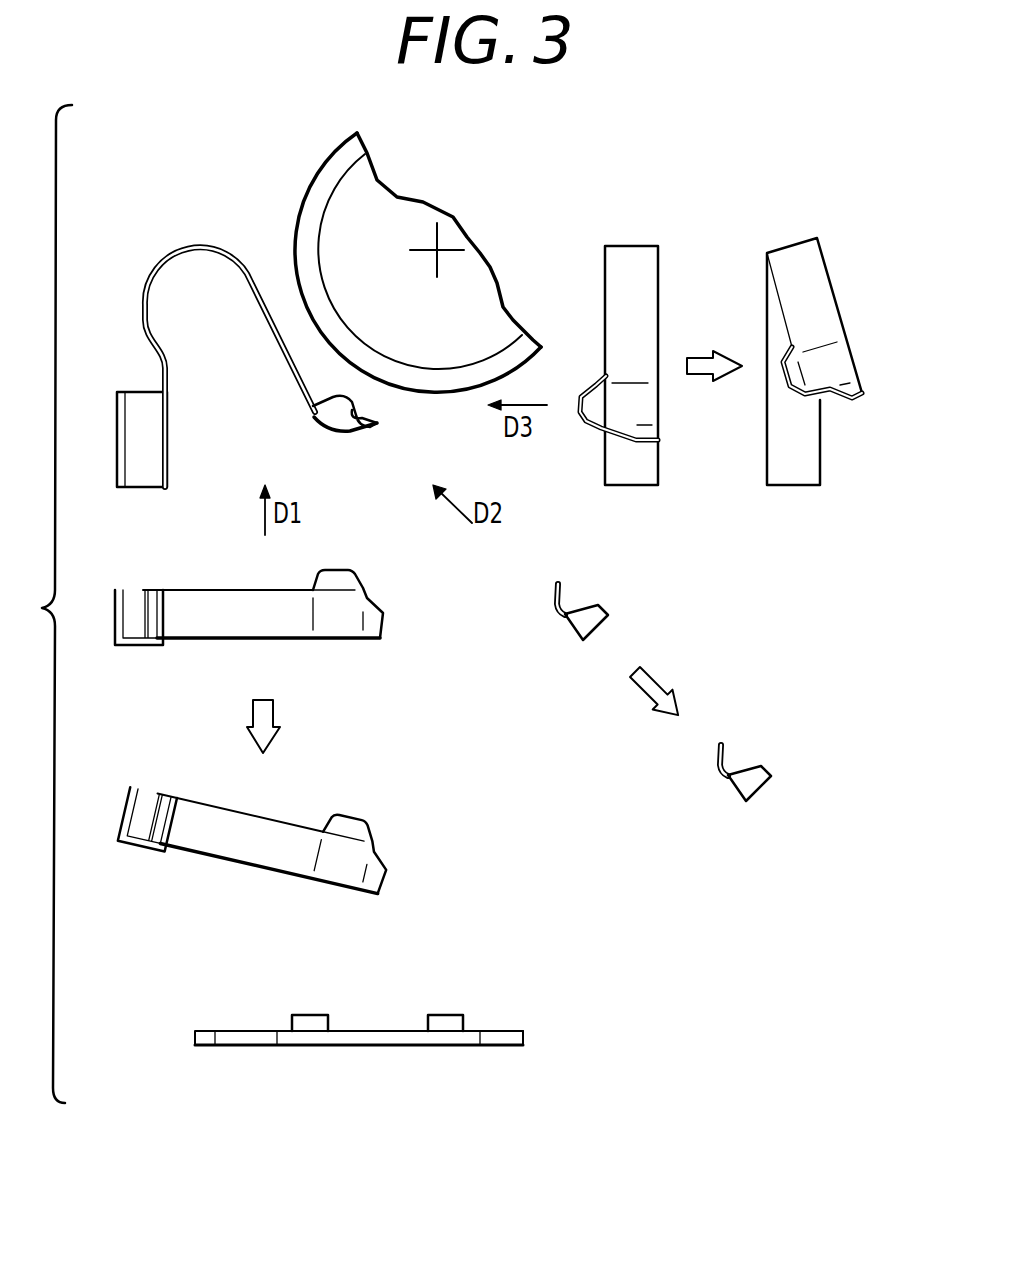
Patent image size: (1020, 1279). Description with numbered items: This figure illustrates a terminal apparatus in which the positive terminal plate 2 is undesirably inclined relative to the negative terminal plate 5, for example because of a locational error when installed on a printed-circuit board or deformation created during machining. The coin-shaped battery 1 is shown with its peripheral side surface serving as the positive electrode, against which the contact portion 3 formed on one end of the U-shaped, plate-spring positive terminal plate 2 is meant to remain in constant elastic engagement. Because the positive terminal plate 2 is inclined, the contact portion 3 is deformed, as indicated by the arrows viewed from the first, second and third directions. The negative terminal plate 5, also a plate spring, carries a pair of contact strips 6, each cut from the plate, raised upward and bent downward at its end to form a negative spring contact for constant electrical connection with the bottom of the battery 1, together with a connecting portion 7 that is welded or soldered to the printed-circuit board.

The coin-shaped battery 1 is at (420, 212).
The positive terminal plate 2 is at (157, 272).
The contact portion 3 is at (347, 432).
The negative terminal plate 5 is at (470, 1047).
The contact strips 6 is at (310, 1022).
The connecting portion 7 is at (515, 1030).